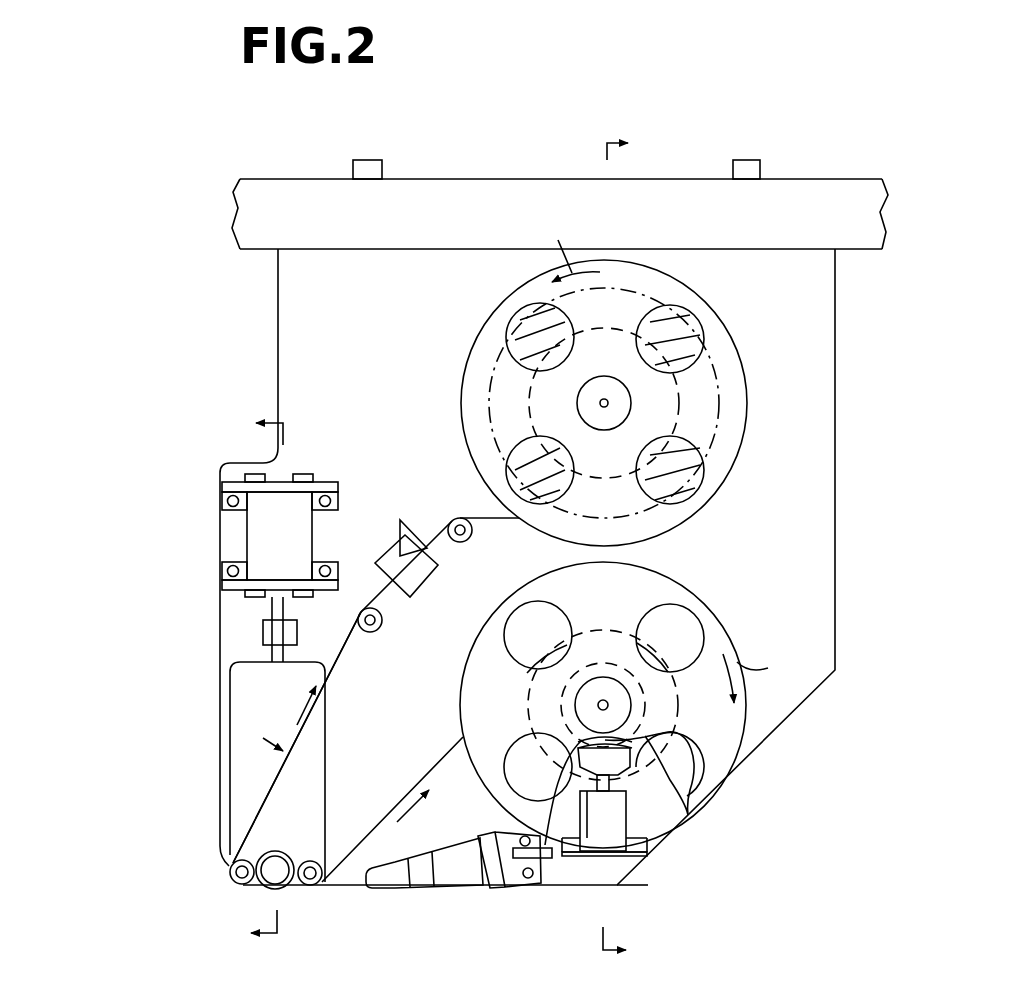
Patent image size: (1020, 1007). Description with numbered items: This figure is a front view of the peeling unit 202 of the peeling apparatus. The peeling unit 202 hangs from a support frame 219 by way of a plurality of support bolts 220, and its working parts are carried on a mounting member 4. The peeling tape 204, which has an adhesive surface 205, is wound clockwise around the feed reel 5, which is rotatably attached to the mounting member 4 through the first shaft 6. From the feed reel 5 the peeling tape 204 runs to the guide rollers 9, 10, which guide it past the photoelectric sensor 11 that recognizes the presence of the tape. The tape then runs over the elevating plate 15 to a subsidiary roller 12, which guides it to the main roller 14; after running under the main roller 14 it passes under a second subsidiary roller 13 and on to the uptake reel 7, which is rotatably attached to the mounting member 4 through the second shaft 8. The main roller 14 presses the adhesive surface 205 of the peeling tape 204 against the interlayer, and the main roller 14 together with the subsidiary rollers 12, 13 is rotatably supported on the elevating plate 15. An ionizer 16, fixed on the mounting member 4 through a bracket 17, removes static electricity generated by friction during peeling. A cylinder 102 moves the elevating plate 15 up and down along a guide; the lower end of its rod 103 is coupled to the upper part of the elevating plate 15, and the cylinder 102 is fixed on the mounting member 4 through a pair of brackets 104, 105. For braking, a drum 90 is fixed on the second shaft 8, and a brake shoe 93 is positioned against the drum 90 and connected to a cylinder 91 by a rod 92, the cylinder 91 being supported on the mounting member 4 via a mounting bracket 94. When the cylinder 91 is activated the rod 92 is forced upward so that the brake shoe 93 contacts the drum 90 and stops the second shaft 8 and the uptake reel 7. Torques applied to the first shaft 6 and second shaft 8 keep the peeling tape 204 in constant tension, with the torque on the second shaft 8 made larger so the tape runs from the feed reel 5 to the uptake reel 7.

The peeling unit 202 is at (183, 364).
The support frame 219 is at (845, 194).
The support bolts 220 is at (377, 160).
The mounting member 4 is at (816, 498).
The feed reel 5 is at (733, 398).
The first shaft 6 is at (606, 398).
The uptake reel 7 is at (728, 732).
The second shaft 8 is at (605, 708).
The guide roller 9 is at (457, 543).
The guide roller 10 is at (372, 634).
The photoelectric sensor 11 is at (402, 525).
The subsidiary roller 12 is at (243, 885).
The subsidiary roller 13 is at (312, 885).
The main roller 14 is at (277, 878).
The elevating plate 15 is at (250, 720).
The ionizer 16 is at (443, 880).
The bracket 17 is at (507, 890).
The drum 90 is at (605, 740).
The cylinder 91 is at (603, 787).
The rod 92 is at (617, 818).
The brake shoe 93 is at (590, 856).
The mounting bracket 94 is at (650, 884).
The cylinder 102 is at (303, 544).
The rod 103 is at (272, 608).
The bracket 104 is at (325, 482).
The bracket 105 is at (314, 592).
The peeling tape 204 is at (470, 513).
The adhesive surface 205 is at (270, 777).